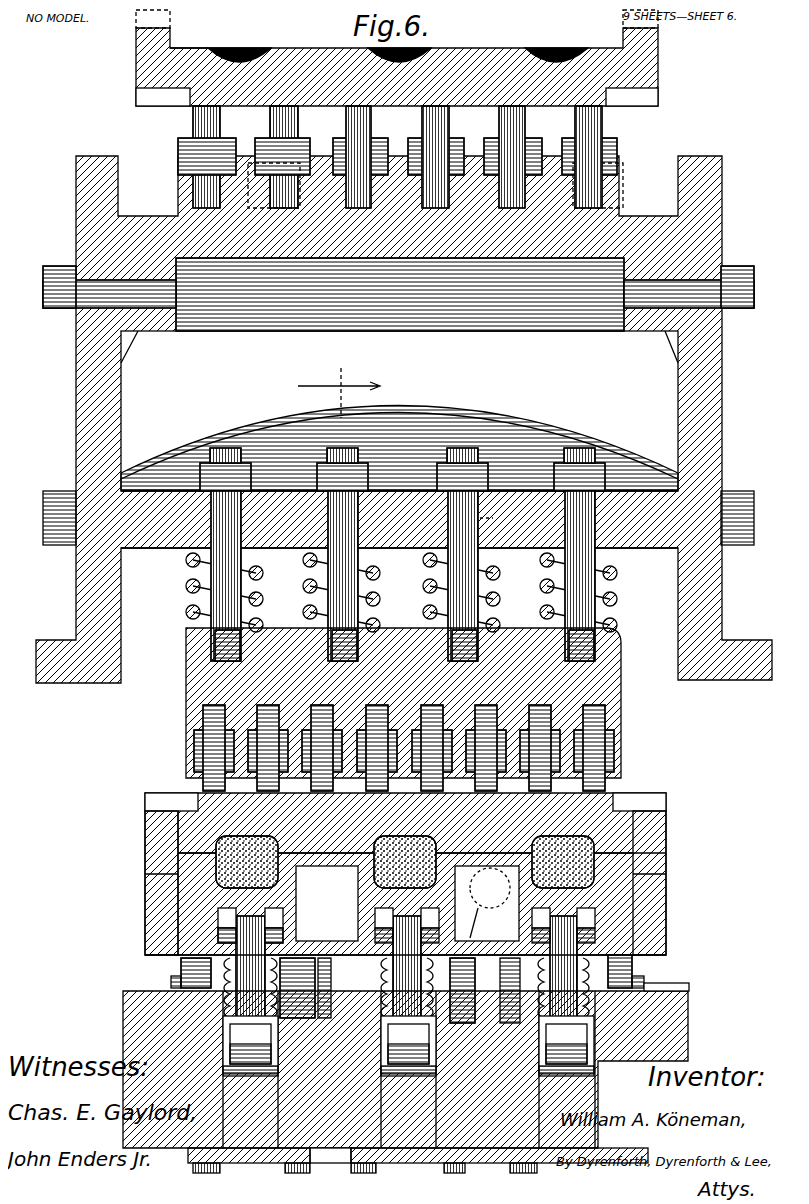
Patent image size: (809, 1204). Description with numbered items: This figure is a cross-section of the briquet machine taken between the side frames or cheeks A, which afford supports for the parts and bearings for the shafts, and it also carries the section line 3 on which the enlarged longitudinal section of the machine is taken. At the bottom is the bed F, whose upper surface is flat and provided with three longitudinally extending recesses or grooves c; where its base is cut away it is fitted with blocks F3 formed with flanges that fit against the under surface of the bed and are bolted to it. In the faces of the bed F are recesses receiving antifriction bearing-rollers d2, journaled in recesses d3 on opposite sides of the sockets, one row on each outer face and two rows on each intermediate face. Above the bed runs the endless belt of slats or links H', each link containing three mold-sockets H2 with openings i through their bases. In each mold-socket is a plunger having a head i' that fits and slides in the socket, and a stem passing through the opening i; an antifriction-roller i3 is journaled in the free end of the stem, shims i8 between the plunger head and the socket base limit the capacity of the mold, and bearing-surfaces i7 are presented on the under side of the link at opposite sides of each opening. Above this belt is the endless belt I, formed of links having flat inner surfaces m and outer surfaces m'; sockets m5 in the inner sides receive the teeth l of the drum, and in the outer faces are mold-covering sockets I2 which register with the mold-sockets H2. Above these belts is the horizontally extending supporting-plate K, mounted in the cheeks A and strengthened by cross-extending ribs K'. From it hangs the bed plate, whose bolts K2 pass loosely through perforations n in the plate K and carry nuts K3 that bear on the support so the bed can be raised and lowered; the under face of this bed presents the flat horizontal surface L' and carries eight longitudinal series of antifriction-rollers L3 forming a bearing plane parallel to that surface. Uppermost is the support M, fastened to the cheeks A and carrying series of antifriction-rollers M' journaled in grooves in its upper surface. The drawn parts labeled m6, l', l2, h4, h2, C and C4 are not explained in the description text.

The side frames or cheeks A is at (68, 372).
The support M is at (398, 196).
The antifriction-rollers M' is at (532, 133).
The flat inner surfaces m is at (397, 136).
The outer surfaces m' is at (193, 33).
The sockets m5 is at (140, 90).
The end block m6 is at (135, 35).
The endless belt or chain I is at (401, 485).
The mold-covering sections or sockets I2 is at (248, 46).
The antifriction-rollers L3 is at (202, 190).
The flat horizontal surface L' is at (429, 703).
The teeth l is at (268, 723).
The pin l' is at (395, 724).
The pin l2 is at (560, 722).
The section line 3 is at (339, 381).
The supporting-plate K is at (399, 519).
The cross-extending ribs K' is at (399, 422).
The bolts K2 is at (563, 440).
The nuts K3 is at (445, 470).
The perforations n is at (460, 512).
The spring h4 is at (178, 590).
The slats or links H' is at (348, 891).
The mold-sockets H2 is at (407, 903).
The slot h2 is at (137, 878).
The openings i is at (500, 962).
The head i' is at (280, 954).
The antifriction-roller i3 is at (330, 972).
The bearing-surfaces i7 is at (477, 923).
The shims i8 is at (490, 888).
The antifriction bearing-rollers d2 is at (173, 962).
The recesses d3 is at (640, 985).
The bolt head C is at (215, 1062).
The recesses or grooves c is at (590, 1040).
The ledge C4 is at (418, 1124).
The bed F is at (680, 1025).
The blocks F3 is at (235, 1165).